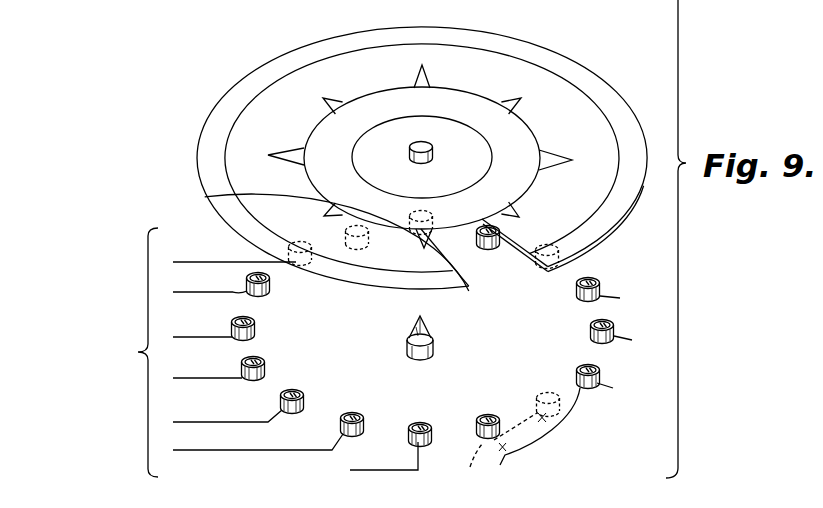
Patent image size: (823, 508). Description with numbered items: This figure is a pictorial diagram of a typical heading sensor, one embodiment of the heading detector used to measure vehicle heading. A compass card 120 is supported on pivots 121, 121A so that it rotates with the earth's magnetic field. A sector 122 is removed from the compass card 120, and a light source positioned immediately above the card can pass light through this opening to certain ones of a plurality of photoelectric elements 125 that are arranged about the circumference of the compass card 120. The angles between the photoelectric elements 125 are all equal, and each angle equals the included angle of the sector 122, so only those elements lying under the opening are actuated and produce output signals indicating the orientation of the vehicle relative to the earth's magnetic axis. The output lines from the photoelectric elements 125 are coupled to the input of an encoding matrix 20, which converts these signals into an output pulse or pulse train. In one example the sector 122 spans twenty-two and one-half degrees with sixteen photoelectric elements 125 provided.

The compass card 120 is at (537, 53).
The pivot 121 is at (424, 145).
The pivot 121A is at (432, 331).
The sector 122 is at (532, 260).
The photoelectric elements 125 is at (522, 442).
The encoding matrix 20 is at (180, 352).